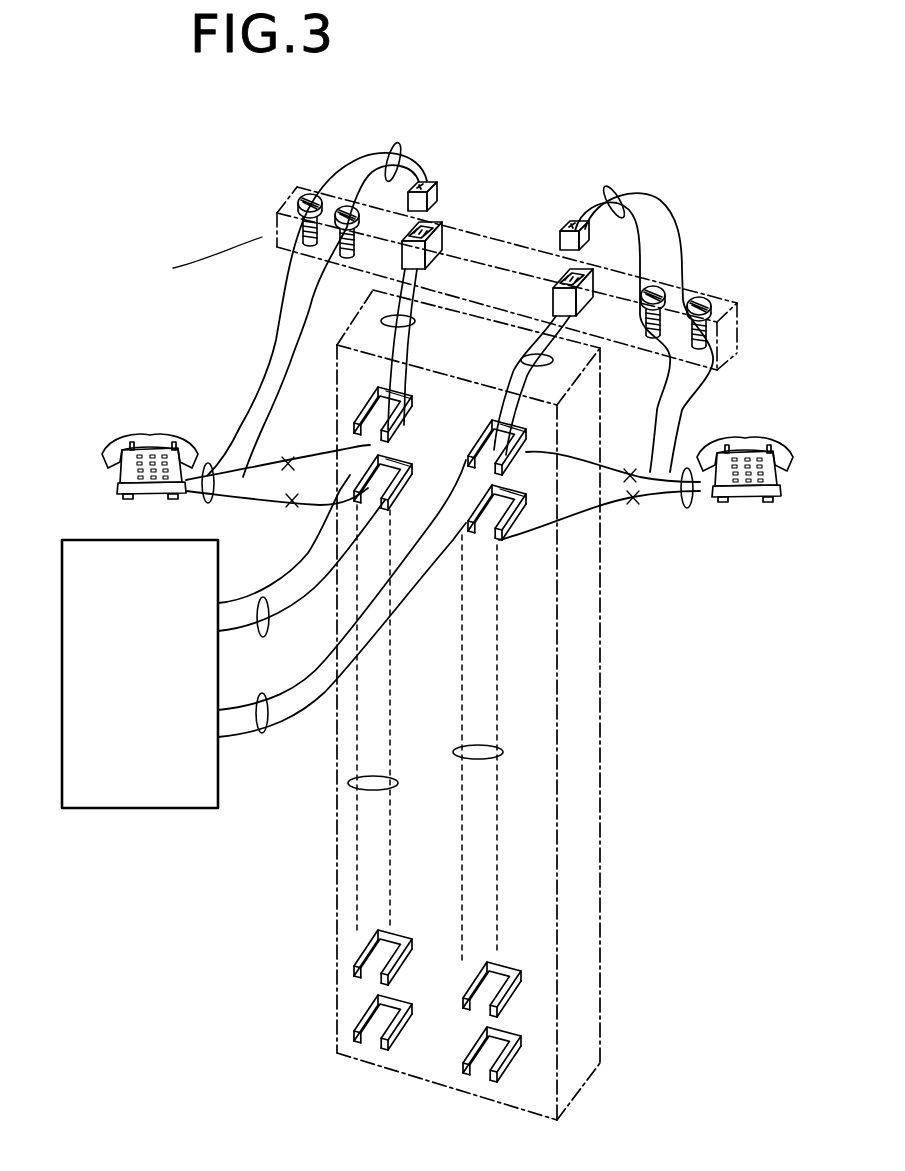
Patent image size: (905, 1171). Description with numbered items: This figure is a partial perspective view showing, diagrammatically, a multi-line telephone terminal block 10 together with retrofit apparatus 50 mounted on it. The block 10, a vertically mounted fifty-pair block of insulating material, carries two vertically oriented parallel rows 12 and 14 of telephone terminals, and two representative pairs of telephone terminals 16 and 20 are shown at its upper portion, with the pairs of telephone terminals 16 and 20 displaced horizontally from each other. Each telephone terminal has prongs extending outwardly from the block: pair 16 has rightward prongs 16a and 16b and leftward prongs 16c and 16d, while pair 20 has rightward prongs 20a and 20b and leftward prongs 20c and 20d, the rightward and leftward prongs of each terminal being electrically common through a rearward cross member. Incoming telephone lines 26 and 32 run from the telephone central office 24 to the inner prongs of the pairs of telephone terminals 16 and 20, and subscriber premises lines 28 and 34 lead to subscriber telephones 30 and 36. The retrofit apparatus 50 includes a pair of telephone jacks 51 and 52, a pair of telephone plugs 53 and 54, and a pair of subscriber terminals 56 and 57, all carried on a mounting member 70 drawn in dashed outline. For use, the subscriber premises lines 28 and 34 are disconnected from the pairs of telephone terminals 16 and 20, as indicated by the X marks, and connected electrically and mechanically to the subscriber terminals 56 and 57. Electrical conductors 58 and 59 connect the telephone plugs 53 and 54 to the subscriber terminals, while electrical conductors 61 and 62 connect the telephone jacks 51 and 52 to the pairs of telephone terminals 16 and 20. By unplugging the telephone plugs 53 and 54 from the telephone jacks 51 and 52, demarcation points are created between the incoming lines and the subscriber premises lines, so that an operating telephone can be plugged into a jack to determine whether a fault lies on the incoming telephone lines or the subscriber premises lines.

The multi-line telephone terminal block 10 is at (585, 692).
The row of telephone terminals 12 is at (349, 783).
The row of telephone terminals 14 is at (503, 752).
The pair of telephone terminals 16 is at (371, 436).
The rightward prong 16a is at (412, 396).
The rightward prong 16b is at (404, 497).
The leftward prong 16c is at (366, 406).
The leftward prong 16d is at (365, 468).
The pair of telephone terminals 20 is at (533, 496).
The rightward prong 20a is at (564, 440).
The rightward prong 20b is at (502, 542).
The leftward prong 20c is at (492, 428).
The leftward prong 20d is at (479, 524).
The telephone central office 24 is at (62, 672).
The incoming telephone line 26 is at (264, 637).
The subscriber premises line 28 is at (212, 462).
The subscriber telephone 30 is at (118, 490).
The incoming telephone line 32 is at (262, 733).
The subscriber premises line 34 is at (688, 508).
The subscriber telephone 36 is at (745, 504).
The retrofit apparatus 50 is at (268, 196).
The telephone jack 51 is at (433, 234).
The telephone jack 52 is at (556, 282).
The telephone plug 53 is at (437, 194).
The telephone plug 54 is at (570, 222).
The subscriber terminal 56 is at (322, 197).
The subscriber terminal 57 is at (702, 298).
The electrical conductor 58 is at (396, 145).
The electrical conductor 59 is at (618, 200).
The electrical conductor 61 is at (390, 320).
The electrical conductor 62 is at (553, 359).
The mounting member 70 is at (167, 280).